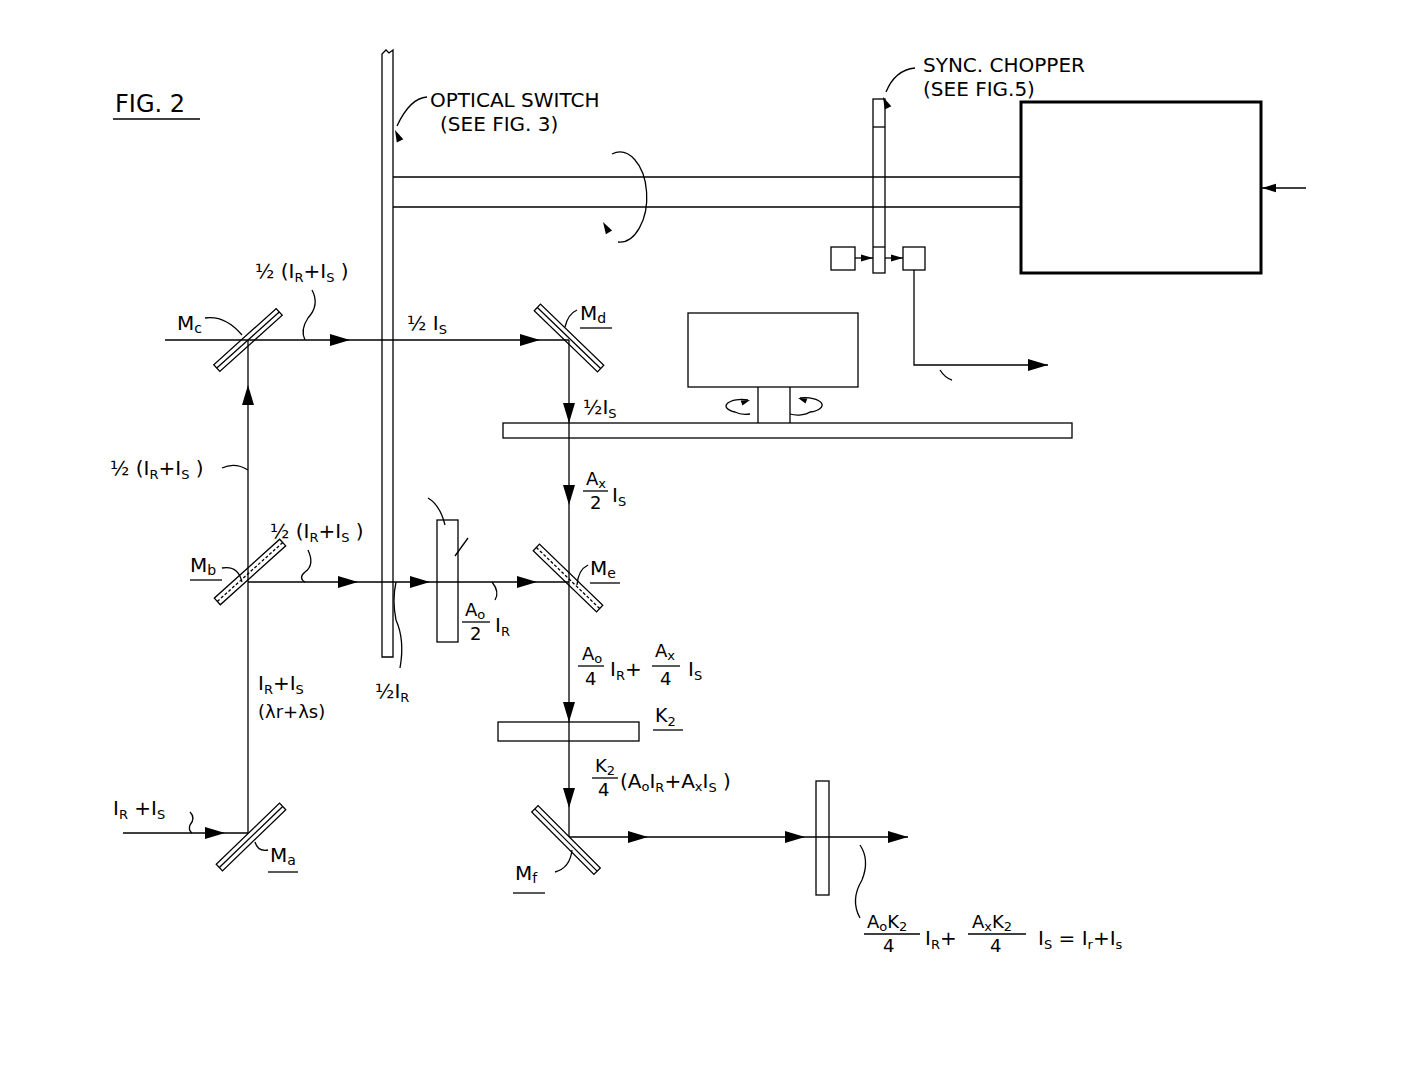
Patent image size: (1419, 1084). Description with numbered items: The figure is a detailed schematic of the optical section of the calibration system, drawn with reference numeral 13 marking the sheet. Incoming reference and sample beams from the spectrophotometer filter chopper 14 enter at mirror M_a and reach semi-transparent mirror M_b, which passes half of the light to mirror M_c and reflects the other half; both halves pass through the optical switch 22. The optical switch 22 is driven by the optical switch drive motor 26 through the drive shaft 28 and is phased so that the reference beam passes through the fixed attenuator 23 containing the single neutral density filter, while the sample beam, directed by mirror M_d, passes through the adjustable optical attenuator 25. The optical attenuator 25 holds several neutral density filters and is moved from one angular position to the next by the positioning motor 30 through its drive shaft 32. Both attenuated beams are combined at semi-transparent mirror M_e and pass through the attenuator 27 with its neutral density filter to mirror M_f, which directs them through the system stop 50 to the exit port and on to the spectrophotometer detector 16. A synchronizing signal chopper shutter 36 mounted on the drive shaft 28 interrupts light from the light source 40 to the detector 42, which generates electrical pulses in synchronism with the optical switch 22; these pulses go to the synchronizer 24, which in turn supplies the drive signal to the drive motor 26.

The optical switch 22 is at (382, 150).
The drive shaft 28 is at (692, 190).
The synchronizing signal chopper shutter 36 is at (880, 152).
The light source 40 is at (838, 249).
The detector 42 is at (918, 252).
The synchronizer 24 is at (1148, 332).
The drive motor 26 is at (1210, 272).
The positioning motor 30 is at (845, 362).
The drive shaft 32 is at (802, 404).
The optical attenuator 25 is at (1072, 424).
The fixed attenuator 23 is at (460, 658).
The attenuator 27 is at (528, 735).
The system stop 50 is at (838, 782).
The spectrophotometer detector 16 is at (948, 850).
The filter chopper 14 is at (94, 876).
The spectrophotometer 13 is at (1302, 963).